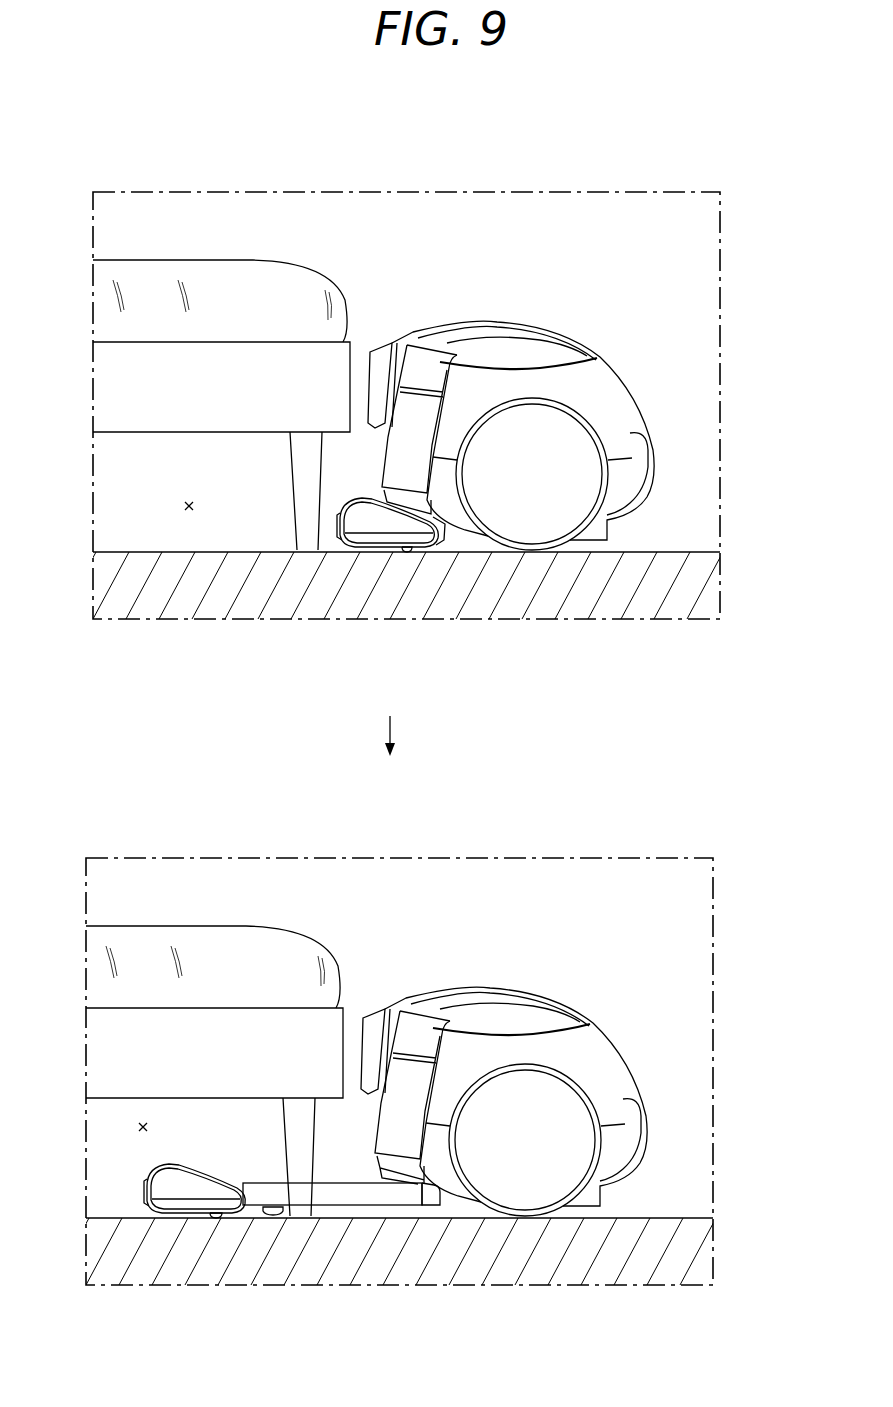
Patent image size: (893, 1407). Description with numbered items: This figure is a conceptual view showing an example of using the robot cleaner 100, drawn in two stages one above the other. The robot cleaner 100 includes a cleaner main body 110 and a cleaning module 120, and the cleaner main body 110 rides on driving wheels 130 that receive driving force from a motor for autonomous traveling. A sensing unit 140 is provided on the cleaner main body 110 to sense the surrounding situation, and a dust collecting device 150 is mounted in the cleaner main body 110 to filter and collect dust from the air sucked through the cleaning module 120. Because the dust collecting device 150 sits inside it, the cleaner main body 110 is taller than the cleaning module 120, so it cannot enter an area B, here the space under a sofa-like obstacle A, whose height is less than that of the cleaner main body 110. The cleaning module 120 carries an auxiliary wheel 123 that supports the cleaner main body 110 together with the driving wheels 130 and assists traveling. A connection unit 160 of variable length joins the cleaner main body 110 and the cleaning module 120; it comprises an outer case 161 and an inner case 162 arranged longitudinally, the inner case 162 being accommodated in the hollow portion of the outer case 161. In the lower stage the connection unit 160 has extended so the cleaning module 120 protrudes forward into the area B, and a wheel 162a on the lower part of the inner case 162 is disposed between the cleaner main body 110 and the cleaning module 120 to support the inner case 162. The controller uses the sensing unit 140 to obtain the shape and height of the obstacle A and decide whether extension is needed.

The obstacle A is at (157, 356).
The area B is at (189, 510).
The robot cleaner 100 is at (566, 308).
The cleaner main body 110 is at (620, 389).
The cleaning module 120 is at (364, 517).
The auxiliary wheel 123 is at (408, 552).
The driving wheels 130 is at (538, 520).
The sensing unit 140 is at (373, 358).
The dust collecting device 150 is at (418, 403).
The connection unit 160 is at (432, 527).
The outer case 161 is at (428, 1195).
The inner case 162 is at (360, 1195).
The wheel 162a is at (273, 1215).